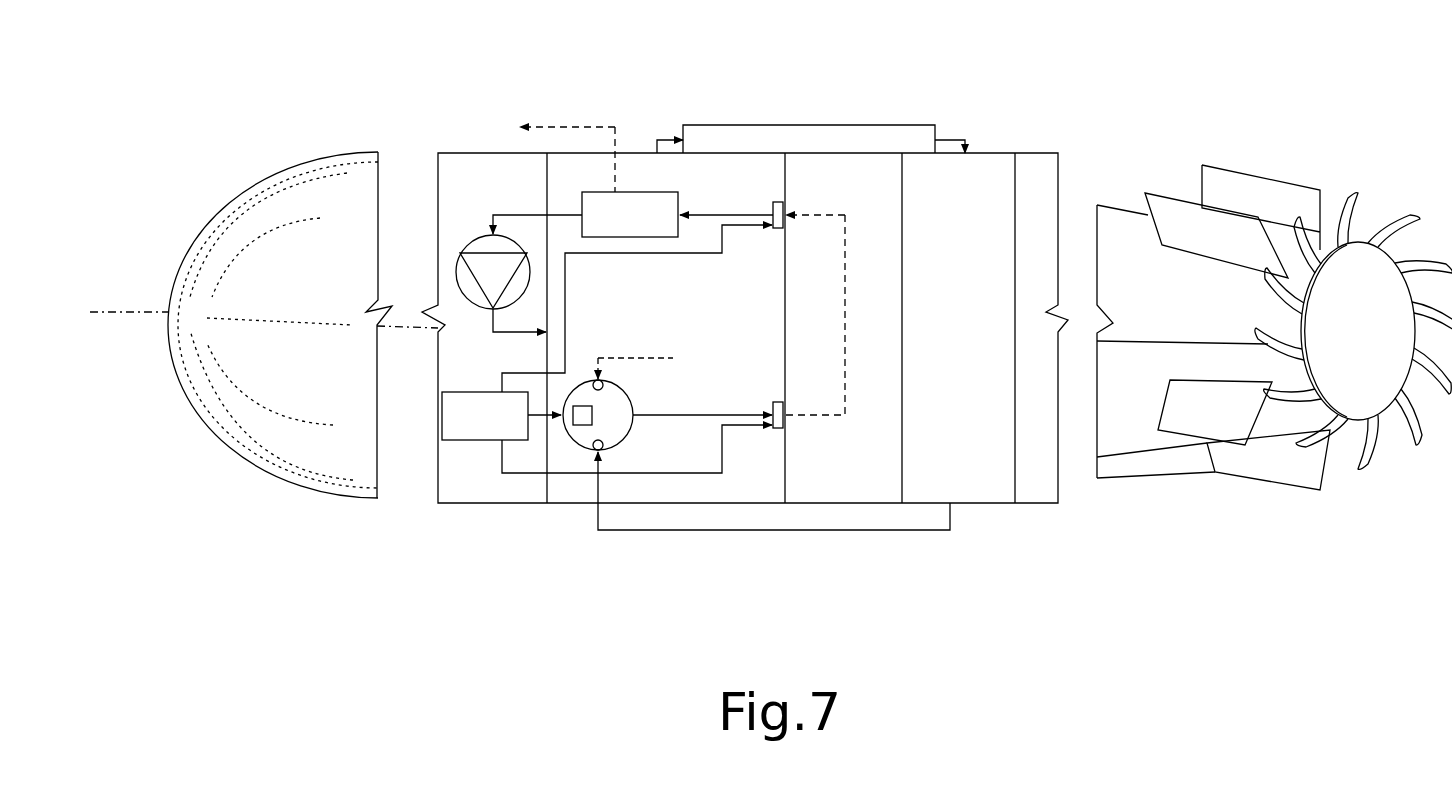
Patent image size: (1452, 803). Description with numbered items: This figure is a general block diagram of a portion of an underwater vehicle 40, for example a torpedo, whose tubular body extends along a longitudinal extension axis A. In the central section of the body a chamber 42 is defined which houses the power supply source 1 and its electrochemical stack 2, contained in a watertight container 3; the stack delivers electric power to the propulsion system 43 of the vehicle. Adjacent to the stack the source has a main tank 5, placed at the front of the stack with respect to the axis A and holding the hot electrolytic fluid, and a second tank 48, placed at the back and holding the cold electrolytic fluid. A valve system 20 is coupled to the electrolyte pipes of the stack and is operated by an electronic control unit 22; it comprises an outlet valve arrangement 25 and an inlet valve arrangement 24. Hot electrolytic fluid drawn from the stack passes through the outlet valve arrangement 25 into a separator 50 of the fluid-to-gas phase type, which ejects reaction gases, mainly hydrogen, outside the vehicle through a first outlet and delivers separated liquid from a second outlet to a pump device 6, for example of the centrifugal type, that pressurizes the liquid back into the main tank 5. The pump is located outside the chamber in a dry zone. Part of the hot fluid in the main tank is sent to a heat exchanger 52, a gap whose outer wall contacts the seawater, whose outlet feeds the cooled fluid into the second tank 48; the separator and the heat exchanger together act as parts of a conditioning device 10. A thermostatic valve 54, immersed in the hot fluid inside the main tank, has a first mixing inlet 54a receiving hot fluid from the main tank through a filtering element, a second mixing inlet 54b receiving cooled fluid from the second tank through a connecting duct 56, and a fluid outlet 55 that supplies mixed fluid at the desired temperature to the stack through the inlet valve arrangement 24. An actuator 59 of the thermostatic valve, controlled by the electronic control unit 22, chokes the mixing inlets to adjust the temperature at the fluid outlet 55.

The longitudinal extension axis A is at (122, 312).
The power supply source 1 is at (830, 147).
The electrochemical stack 2 is at (882, 167).
The container 3 is at (855, 155).
The main tank 5 is at (713, 163).
The pump device 6 is at (468, 262).
The conditioning device 10 is at (637, 190).
The valve system 20 is at (775, 200).
The electronic control unit 22 is at (467, 443).
The inlet valve arrangement 24 is at (773, 400).
The outlet valve arrangement 25 is at (775, 232).
The underwater vehicle 40 is at (1077, 103).
The chamber 42 is at (625, 133).
The propulsion system 43 is at (1367, 362).
The second tank 48 is at (985, 180).
The separator 50 is at (678, 208).
The heat exchanger 52 is at (790, 130).
The thermostatic valve 54 is at (583, 383).
The first mixing inlet 54a is at (627, 390).
The second mixing inlet 54b is at (604, 441).
The fluid outlet 55 is at (633, 412).
The connecting duct 56 is at (688, 530).
The actuator 59 is at (578, 427).